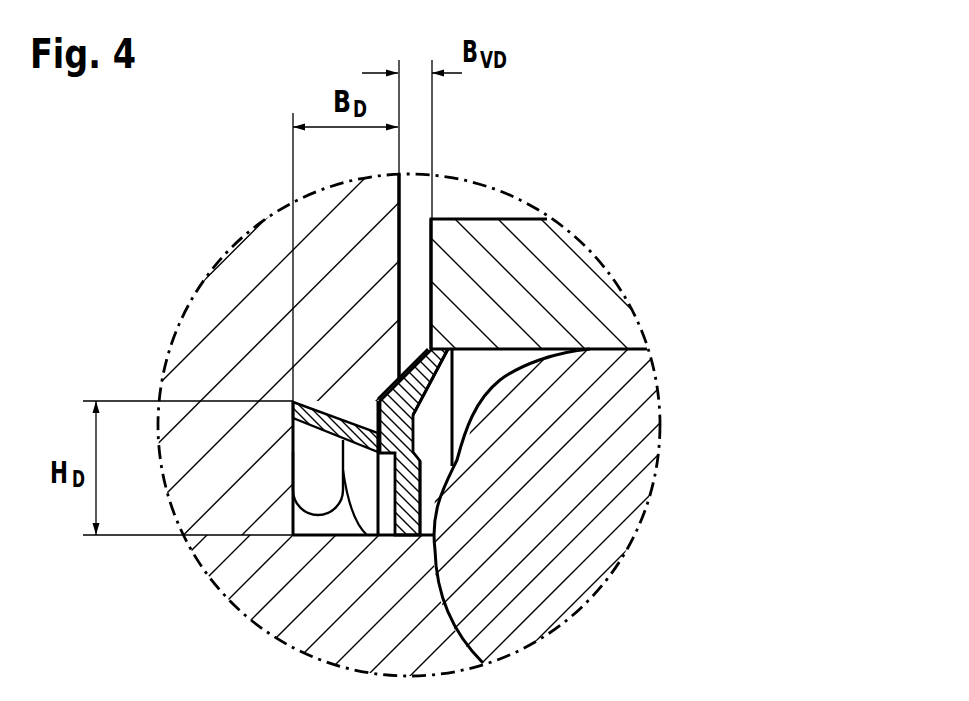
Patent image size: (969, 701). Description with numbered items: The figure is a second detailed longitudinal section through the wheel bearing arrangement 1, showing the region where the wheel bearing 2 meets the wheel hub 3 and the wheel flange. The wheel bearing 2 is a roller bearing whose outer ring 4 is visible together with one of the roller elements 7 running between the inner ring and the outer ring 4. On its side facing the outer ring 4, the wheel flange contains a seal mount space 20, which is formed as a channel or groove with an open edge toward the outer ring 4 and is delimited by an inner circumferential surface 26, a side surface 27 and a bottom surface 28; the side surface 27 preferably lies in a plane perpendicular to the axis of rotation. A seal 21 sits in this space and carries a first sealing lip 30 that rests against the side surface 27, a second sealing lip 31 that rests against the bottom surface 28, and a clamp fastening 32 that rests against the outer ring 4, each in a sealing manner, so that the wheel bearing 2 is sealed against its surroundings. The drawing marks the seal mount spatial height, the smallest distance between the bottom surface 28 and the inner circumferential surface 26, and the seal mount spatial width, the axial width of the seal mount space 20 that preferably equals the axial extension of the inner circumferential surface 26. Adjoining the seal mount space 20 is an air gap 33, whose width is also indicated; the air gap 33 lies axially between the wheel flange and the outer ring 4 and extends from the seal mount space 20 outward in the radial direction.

The wheel bearing arrangement 1 is at (670, 158).
The wheel bearing 2 is at (670, 220).
The wheel hub 3 is at (418, 192).
The outer ring 4 is at (536, 275).
The roller elements 7 is at (565, 432).
The seal mount space 20 is at (372, 385).
The seal 21 is at (415, 421).
The inner circumferential surface 26 is at (345, 398).
The side surface 27 is at (293, 443).
The bottom surface 28 is at (432, 500).
The first sealing lip 30 is at (323, 513).
The second sealing lip 31 is at (425, 500).
The clamp fastening 32 is at (437, 375).
The air gap 33 is at (413, 262).